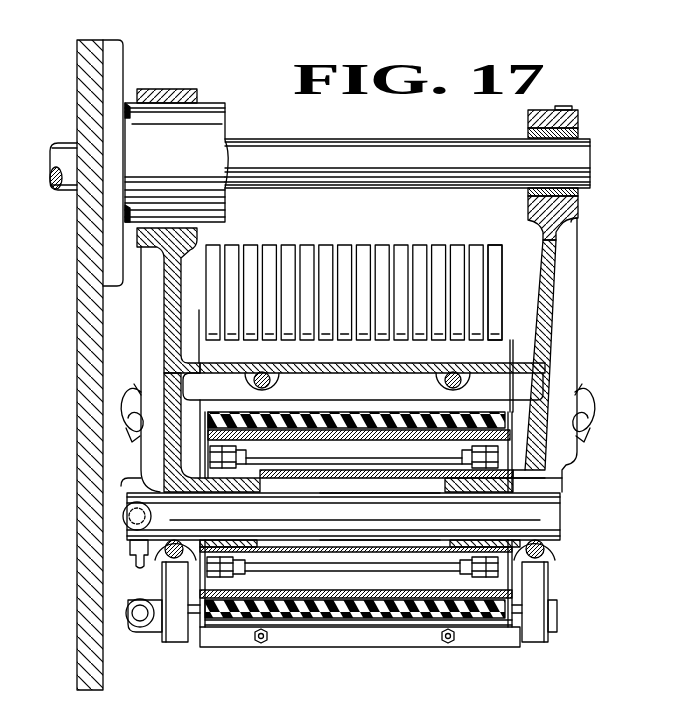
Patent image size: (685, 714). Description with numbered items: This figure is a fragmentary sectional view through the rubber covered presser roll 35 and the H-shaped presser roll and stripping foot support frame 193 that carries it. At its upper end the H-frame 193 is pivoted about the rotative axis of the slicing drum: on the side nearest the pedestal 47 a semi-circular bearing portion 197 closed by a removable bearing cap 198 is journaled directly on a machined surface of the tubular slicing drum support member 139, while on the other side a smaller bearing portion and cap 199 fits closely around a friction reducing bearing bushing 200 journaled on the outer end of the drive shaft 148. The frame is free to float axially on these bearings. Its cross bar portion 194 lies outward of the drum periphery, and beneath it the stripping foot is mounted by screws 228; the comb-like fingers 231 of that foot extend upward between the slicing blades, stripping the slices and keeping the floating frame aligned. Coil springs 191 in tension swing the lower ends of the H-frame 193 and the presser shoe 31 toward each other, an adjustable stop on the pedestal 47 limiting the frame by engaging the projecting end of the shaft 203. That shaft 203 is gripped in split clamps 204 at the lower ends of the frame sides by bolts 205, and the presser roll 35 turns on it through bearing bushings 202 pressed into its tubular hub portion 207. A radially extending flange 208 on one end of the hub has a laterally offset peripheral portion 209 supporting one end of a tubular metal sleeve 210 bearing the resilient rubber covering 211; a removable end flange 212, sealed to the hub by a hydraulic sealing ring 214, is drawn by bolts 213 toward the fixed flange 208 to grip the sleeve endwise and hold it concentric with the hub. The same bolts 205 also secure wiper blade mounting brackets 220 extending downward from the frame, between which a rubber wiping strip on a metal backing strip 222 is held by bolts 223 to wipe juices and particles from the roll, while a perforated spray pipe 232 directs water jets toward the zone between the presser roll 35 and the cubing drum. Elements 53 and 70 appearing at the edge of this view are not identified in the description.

The pedestal 47 is at (98, 604).
The tubular slicing drum support member 139 is at (184, 151).
The removable bearing cap 198 is at (197, 97).
The drive shaft 148 is at (404, 170).
The bearing portion and cap 199 is at (578, 117).
The friction reducing bearing bushing 200 is at (579, 188).
The H-shaped presser roll and stripping foot support frame 193 is at (568, 265).
The semi-circular bearing portion 197 is at (200, 233).
The cross bar portion 194 is at (382, 395).
The screws 228 is at (256, 382).
The comb-like fingers 231 is at (430, 252).
The presser shoe 31 is at (496, 258).
The coil springs 191 is at (128, 400).
The removable end flange 212 is at (206, 442).
The tubular hub portion 207 is at (515, 476).
The radially extending flange 208 is at (512, 448).
The hydraulic sealing ring 214 is at (222, 468).
The bolts 213 is at (378, 460).
The bearing bushings 202 is at (262, 488).
The shaft 203 is at (406, 521).
The tubular metal sleeve 210 is at (352, 572).
The laterally offset peripheral portion 209 is at (470, 580).
The rubber covering 211 is at (334, 648).
The metal backing strip 222 is at (362, 648).
The bolts 223 is at (261, 645).
The wiper blade mounting brackets 220 is at (180, 640).
The split clamps 204 is at (152, 498).
The bolts 205 is at (170, 560).
The spray pipe 232 is at (552, 614).
The presser roll 35 is at (530, 591).
The member 53 is at (6, 268).
The member 70 is at (8, 453).